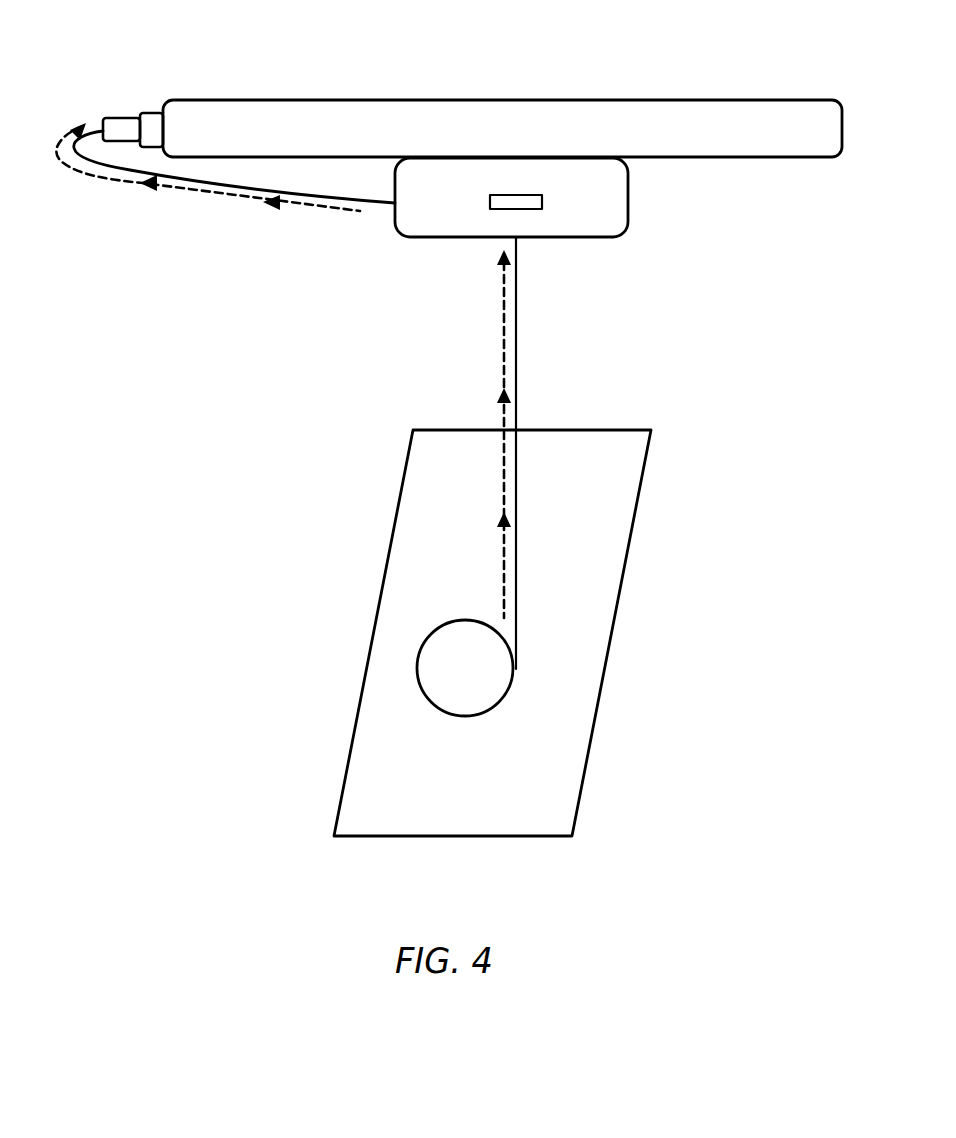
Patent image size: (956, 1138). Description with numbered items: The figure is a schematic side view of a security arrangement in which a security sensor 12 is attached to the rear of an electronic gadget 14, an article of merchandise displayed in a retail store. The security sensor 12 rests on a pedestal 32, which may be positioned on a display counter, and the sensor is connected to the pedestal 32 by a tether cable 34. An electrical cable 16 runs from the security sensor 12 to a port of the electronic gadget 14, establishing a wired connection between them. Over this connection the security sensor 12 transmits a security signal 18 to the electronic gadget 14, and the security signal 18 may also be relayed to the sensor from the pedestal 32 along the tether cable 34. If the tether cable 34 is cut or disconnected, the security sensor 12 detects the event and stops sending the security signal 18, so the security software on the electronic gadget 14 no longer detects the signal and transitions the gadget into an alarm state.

The security sensor 12 is at (628, 198).
The electronic gadget 14 is at (738, 100).
The electrical cable 16 is at (125, 165).
The security signal 18 is at (177, 190).
The pedestal 32 is at (624, 587).
The tether cable 34 is at (516, 365).